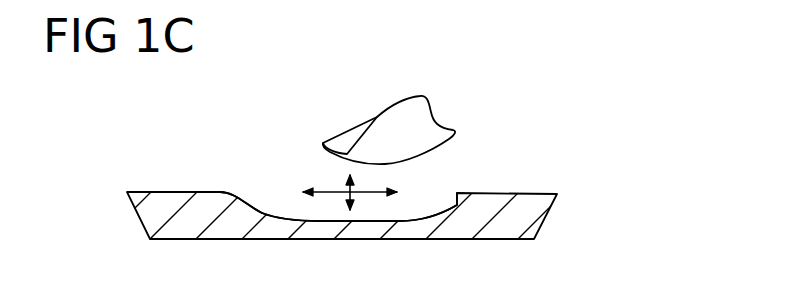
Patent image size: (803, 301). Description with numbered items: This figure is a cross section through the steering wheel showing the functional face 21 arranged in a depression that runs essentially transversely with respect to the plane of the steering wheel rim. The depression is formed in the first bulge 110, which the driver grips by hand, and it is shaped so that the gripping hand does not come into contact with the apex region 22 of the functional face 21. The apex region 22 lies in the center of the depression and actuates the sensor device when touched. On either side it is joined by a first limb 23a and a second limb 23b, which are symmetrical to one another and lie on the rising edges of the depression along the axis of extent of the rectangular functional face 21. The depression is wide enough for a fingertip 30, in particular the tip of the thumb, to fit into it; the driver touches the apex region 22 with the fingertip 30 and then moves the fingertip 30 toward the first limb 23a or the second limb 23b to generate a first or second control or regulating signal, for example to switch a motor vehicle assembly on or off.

The first bulge 110 is at (520, 235).
The functional face 21 is at (428, 185).
The apex region 22 is at (330, 220).
The first limb 23a is at (240, 203).
The second limb 23b is at (462, 193).
The fingertip 30 is at (340, 168).